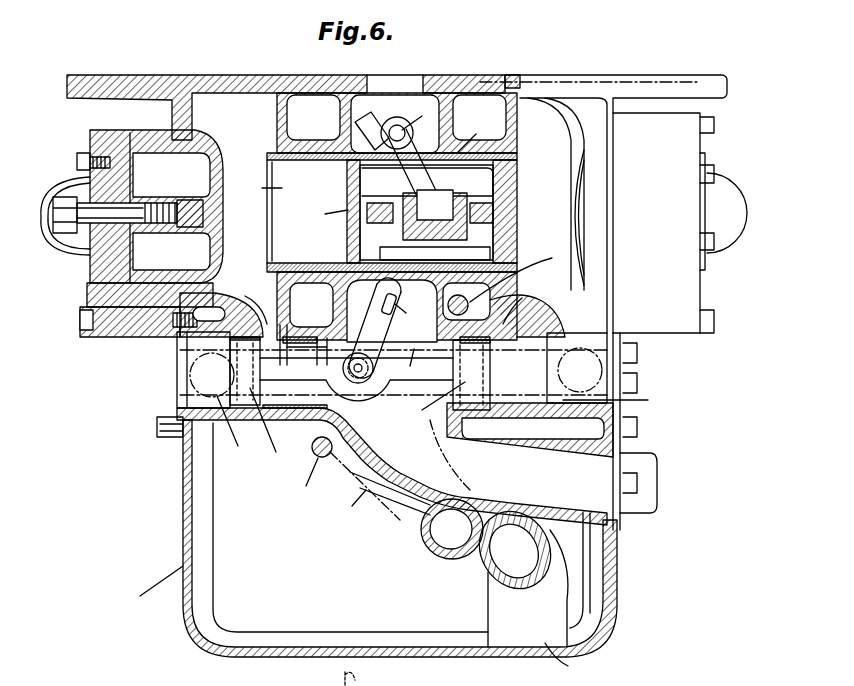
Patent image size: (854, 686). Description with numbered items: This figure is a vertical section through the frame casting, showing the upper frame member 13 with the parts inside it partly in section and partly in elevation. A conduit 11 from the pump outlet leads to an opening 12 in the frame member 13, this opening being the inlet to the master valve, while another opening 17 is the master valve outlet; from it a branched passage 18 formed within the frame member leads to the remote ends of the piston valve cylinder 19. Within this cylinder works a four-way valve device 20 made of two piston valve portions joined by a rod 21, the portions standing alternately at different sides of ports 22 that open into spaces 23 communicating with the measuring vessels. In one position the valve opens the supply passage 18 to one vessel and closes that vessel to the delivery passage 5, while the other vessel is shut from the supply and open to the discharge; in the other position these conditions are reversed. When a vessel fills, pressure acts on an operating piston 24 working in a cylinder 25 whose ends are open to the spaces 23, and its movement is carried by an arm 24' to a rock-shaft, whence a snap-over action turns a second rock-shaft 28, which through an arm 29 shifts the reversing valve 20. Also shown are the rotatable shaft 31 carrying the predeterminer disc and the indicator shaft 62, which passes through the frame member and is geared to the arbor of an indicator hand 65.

The delivery passage 5 is at (597, 321).
The conduit 11 is at (543, 597).
The opening 12 is at (515, 549).
The upper frame member 13 is at (371, 537).
The opening 17 is at (452, 529).
The branched passage 18 is at (392, 467).
The piston valve cylinder 19 is at (429, 399).
The four-way valve device 20 is at (360, 405).
The rod 21 is at (393, 362).
The ports 22 is at (372, 318).
The spaces 23 is at (397, 204).
The operating piston 24 is at (392, 216).
The arm 24' is at (478, 131).
The cylinder 25 is at (242, 214).
The rock-shaft 28 is at (408, 311).
The arm 29 is at (372, 330).
The rotatable shaft 31 is at (312, 470).
The indicator shaft 62 is at (511, 275).
The indicator hand 65 is at (369, 675).